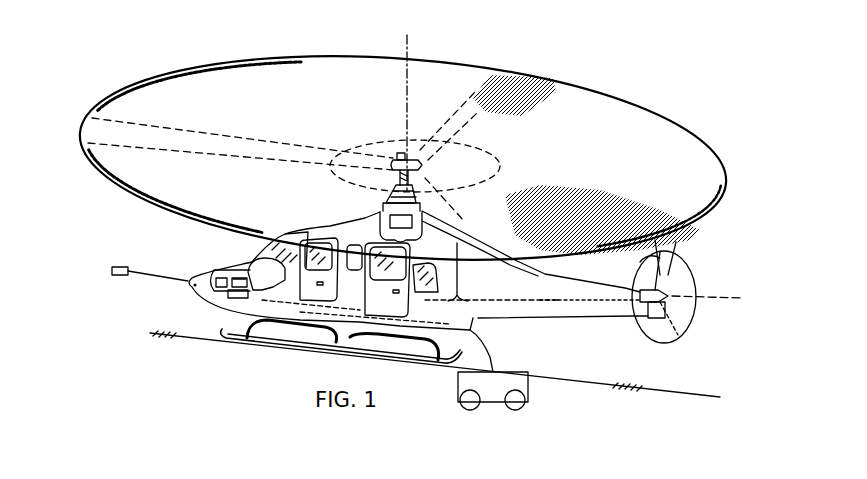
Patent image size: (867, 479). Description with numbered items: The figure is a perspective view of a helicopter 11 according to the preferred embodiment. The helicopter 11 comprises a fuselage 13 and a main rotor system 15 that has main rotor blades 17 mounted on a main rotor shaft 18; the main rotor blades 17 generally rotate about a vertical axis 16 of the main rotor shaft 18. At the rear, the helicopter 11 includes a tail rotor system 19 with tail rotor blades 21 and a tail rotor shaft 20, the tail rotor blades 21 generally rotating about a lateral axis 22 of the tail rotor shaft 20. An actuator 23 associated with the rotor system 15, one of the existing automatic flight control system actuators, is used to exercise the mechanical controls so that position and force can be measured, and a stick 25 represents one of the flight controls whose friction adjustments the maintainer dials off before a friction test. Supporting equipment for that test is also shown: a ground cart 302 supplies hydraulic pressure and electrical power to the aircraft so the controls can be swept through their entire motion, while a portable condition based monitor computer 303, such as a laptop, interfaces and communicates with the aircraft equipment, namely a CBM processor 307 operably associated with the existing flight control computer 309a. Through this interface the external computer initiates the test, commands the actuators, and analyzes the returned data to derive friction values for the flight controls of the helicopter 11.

The helicopter 11 is at (560, 62).
The fuselage 13 is at (226, 304).
The main rotor system 15 is at (462, 205).
The vertical axis 16 is at (410, 112).
The main rotor blades 17 is at (202, 135).
The main rotor shaft 18 is at (393, 181).
The tail rotor system 19 is at (672, 355).
The tail rotor shaft 20 is at (641, 318).
The tail rotor blades 21 is at (684, 270).
The lateral axis 22 is at (710, 302).
The actuator 23 is at (430, 218).
The stick 25 is at (256, 293).
The ground cart 302 is at (531, 390).
The portable condition based monitor computer 303 is at (112, 268).
The CBM processor 307 is at (200, 288).
The flight control computer 309a is at (232, 282).